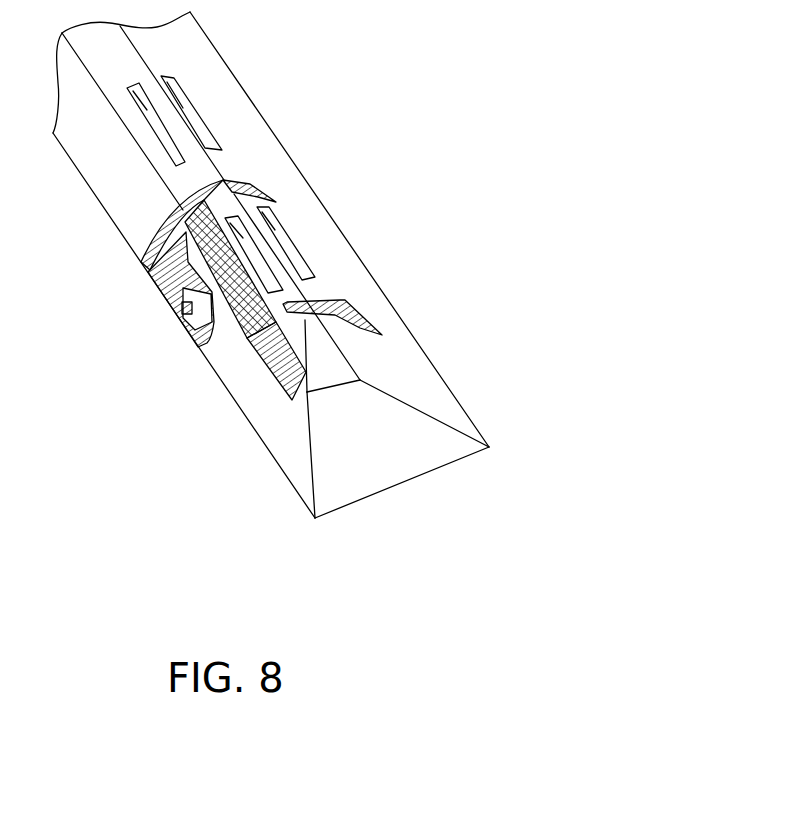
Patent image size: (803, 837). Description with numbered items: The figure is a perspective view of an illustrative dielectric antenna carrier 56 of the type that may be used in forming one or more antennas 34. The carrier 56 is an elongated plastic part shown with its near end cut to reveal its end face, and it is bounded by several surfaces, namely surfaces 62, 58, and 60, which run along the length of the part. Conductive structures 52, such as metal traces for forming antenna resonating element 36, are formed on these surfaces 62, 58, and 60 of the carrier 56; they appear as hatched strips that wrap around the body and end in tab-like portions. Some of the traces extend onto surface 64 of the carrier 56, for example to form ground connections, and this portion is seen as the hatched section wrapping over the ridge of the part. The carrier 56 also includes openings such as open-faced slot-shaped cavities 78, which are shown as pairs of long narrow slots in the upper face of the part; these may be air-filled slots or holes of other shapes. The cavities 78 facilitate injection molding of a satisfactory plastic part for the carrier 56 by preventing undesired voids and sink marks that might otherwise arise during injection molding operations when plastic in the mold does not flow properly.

The antenna 34 is at (418, 50).
The antenna resonating element 36 is at (243, 155).
The conductive structures 52 is at (265, 190).
The carrier 56 is at (335, 497).
The surface 58 is at (328, 378).
The surface 60 is at (440, 390).
The surface 62 is at (282, 452).
The surface 64 is at (140, 289).
The open-faced slot-shaped cavities 78 is at (147, 108).